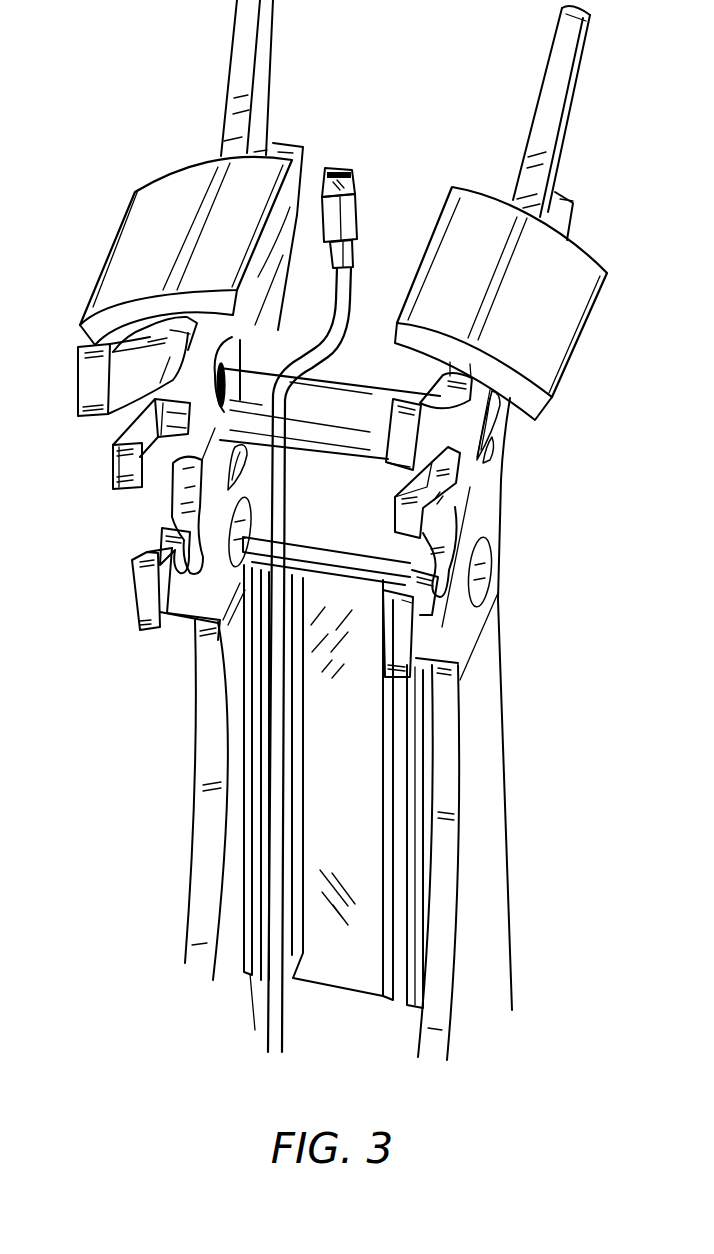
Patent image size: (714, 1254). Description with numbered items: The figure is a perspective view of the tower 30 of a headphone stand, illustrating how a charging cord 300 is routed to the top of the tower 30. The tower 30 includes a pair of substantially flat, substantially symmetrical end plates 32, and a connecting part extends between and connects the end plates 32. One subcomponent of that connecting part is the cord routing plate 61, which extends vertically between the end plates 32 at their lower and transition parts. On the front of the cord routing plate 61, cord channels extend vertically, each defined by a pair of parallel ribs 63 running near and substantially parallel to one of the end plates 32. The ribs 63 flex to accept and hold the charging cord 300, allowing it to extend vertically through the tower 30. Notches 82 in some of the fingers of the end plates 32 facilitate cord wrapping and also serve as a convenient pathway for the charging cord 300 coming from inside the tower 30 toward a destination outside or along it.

The tower 30 is at (508, 903).
The end plates 32 is at (198, 700).
The cord routing plate 61 is at (323, 800).
The ribs 63 is at (395, 953).
The notches 82 is at (153, 398).
The charging cord 300 is at (351, 300).